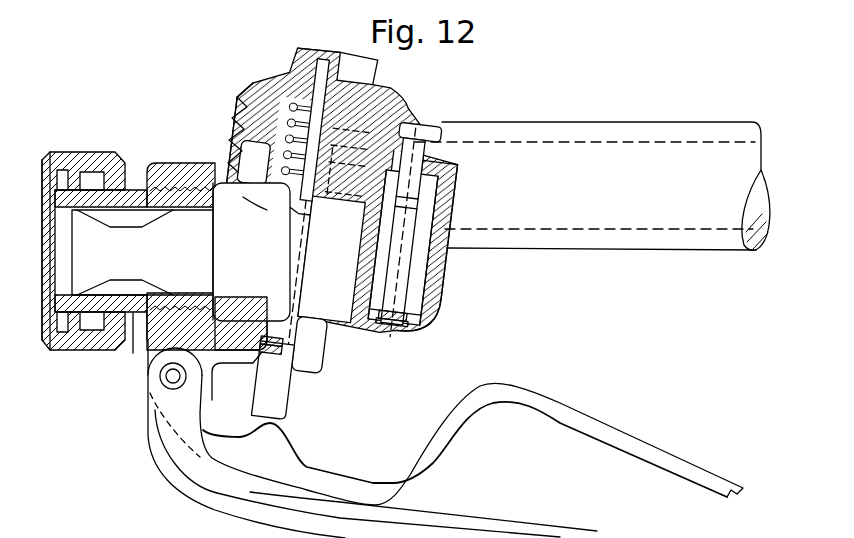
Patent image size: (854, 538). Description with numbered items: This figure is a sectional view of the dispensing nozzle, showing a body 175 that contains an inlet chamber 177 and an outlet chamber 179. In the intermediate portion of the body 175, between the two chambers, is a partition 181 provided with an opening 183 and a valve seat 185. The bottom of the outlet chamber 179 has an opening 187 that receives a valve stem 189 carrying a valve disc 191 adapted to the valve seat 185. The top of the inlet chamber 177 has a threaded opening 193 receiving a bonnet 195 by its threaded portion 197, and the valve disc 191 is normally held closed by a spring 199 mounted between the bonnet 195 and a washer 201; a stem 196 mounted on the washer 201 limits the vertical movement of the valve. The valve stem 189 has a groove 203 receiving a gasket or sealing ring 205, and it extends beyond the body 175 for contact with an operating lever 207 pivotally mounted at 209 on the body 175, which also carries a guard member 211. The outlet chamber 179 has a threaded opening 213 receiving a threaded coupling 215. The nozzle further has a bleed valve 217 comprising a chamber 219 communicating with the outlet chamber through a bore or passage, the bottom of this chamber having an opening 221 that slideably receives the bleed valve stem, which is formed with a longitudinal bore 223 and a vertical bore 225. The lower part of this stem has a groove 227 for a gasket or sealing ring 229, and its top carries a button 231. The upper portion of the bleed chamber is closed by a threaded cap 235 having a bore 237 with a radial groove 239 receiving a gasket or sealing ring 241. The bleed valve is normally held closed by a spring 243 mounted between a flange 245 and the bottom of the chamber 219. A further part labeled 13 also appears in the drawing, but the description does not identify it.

The section line 13 is at (256, 250).
The body 175 is at (668, 128).
The inlet chamber 177 is at (264, 130).
The outlet chamber 179 is at (268, 296).
The partition 181 is at (220, 216).
The opening 183 is at (268, 216).
The valve seat 185 is at (246, 168).
The opening 187 is at (275, 283).
The valve stem 189 is at (303, 410).
The valve disc 191 is at (272, 187).
The threaded opening 193 is at (262, 99).
The bonnet 195 is at (303, 47).
The stem 196 is at (333, 108).
The threaded portion 197 is at (253, 80).
The spring 199 is at (266, 116).
The washer 201 is at (276, 162).
The groove 203 is at (266, 380).
The gasket or sealing ring 205 is at (270, 362).
The operating lever 207 is at (450, 454).
The pivot 209 is at (163, 376).
The guard member 211 is at (562, 537).
The threaded opening 213 is at (147, 178).
The threaded coupling 215 is at (134, 333).
The bleed valve 217 is at (62, 348).
The chamber 219 is at (56, 153).
The opening 221 is at (392, 333).
The longitudinal bore 223 is at (378, 338).
The vertical bore 225 is at (460, 190).
The groove 227 is at (403, 306).
The gasket or sealing ring 229 is at (407, 313).
The button 231 is at (412, 138).
The threaded cap 235 is at (457, 172).
The bore 237 is at (427, 149).
The radial groove 239 is at (440, 216).
The gasket or sealing ring 241 is at (410, 205).
The spring 243 is at (447, 276).
The flange 245 is at (375, 200).